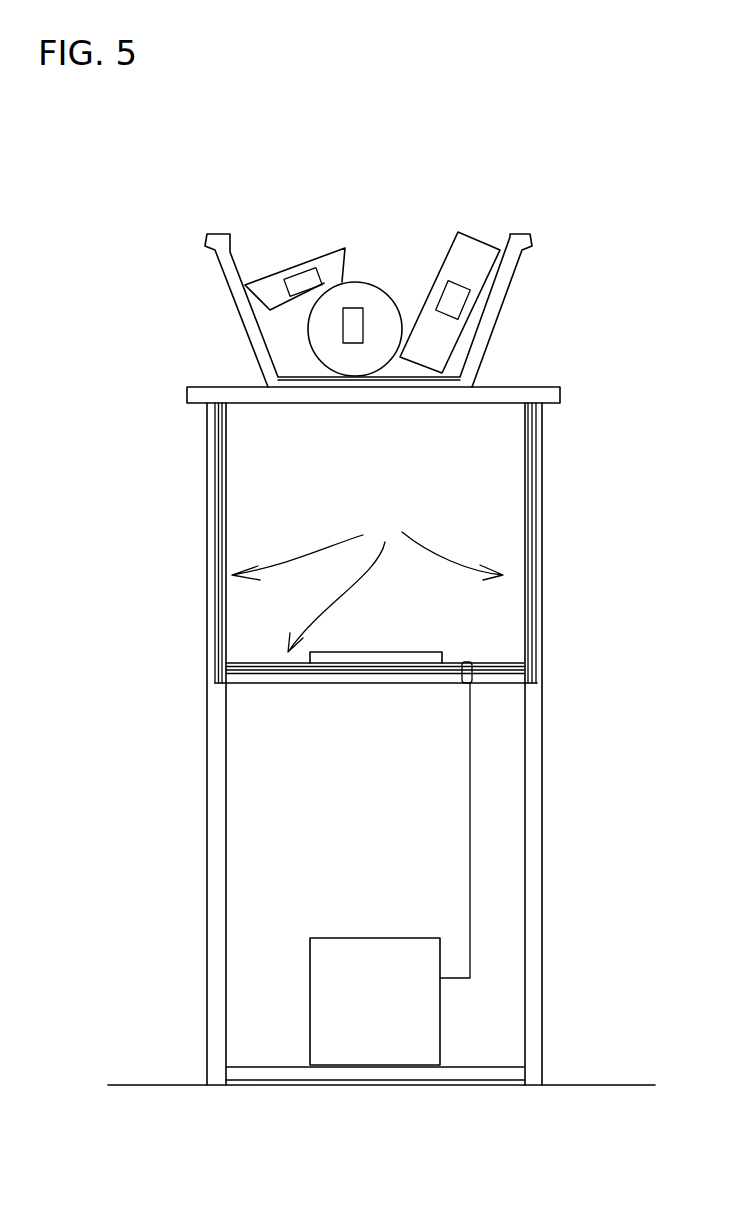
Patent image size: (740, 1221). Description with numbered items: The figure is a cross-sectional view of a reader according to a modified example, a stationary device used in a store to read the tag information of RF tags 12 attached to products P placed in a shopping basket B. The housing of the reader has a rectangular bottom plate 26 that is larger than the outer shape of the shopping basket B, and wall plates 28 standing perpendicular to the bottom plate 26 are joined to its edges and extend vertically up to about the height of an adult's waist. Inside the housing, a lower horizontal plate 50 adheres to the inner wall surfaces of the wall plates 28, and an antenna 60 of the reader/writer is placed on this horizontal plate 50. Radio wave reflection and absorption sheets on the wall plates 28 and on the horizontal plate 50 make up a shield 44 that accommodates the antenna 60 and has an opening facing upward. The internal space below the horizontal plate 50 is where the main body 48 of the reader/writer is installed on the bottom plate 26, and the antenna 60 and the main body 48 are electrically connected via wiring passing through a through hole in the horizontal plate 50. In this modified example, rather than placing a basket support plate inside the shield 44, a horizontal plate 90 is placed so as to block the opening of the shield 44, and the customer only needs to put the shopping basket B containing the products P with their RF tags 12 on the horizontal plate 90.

The shopping basket B is at (233, 250).
The product P is at (333, 265).
The RF tag 12 is at (353, 323).
The horizontal plate 90 is at (547, 390).
The wall plate 28 is at (218, 800).
The horizontal plate 50 is at (253, 680).
The antenna 60 is at (393, 681).
The shield 44 is at (367, 579).
The main body 48 is at (362, 960).
The bottom plate 26 is at (395, 1070).